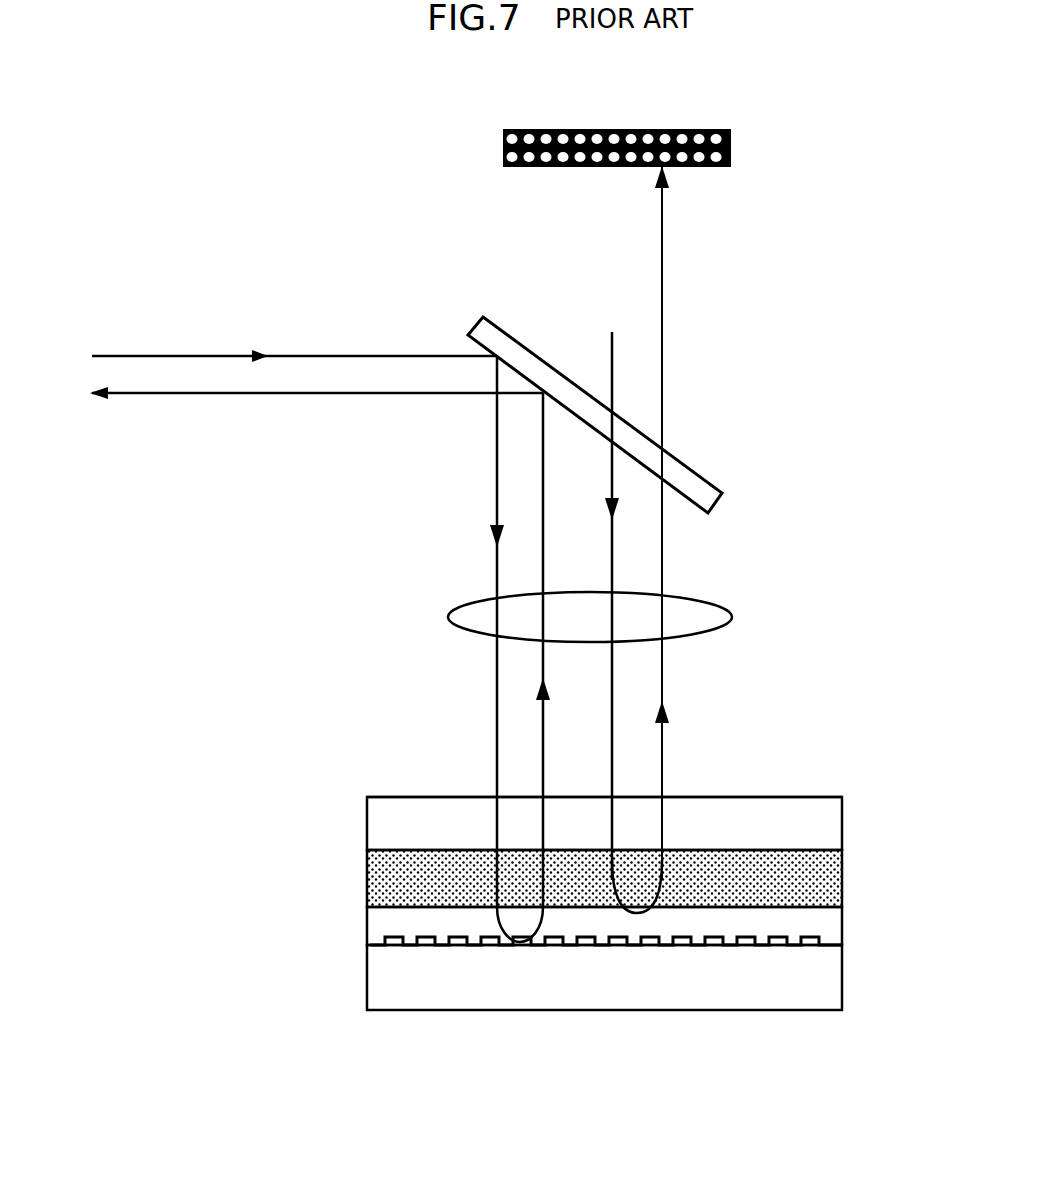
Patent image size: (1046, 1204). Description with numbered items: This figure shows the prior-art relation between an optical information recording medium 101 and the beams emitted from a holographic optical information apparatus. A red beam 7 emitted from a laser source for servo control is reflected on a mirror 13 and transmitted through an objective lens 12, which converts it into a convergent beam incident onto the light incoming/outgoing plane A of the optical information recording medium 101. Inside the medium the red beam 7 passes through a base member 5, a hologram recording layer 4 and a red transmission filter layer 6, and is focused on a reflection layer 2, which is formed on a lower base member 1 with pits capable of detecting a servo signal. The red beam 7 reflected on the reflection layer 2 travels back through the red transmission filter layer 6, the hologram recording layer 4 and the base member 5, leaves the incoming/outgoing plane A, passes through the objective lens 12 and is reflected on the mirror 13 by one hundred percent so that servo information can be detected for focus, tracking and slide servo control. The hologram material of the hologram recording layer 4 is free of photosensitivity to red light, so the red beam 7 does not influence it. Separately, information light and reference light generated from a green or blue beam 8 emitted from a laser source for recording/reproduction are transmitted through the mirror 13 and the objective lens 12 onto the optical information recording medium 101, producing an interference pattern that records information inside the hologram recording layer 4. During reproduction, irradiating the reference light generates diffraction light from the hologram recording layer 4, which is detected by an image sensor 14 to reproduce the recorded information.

The base member 1 is at (782, 990).
The reflection layer 2 is at (367, 932).
The hologram recording layer 4 is at (825, 880).
The base member 5 is at (778, 812).
The red transmission filter layer 6 is at (825, 927).
The red beam 7 is at (208, 354).
The green or blue beam 8 is at (610, 346).
The objective lens 12 is at (722, 607).
The mirror 13 is at (718, 500).
The image sensor 14 is at (733, 142).
The optical information recording medium 101 is at (615, 878).
The light incoming/outgoing plane A is at (397, 797).